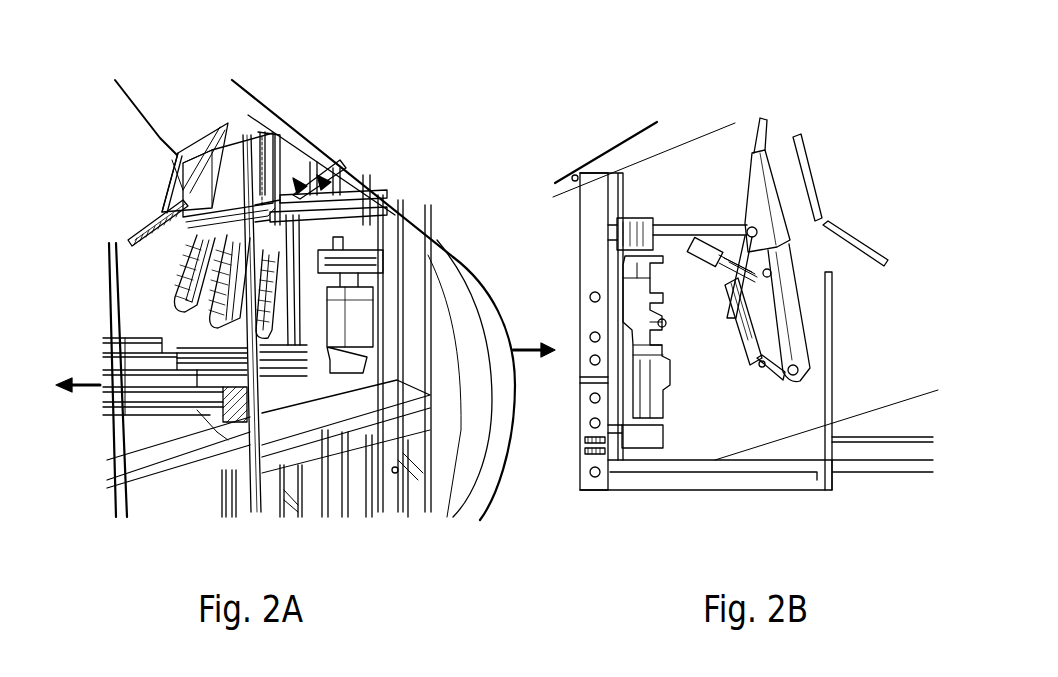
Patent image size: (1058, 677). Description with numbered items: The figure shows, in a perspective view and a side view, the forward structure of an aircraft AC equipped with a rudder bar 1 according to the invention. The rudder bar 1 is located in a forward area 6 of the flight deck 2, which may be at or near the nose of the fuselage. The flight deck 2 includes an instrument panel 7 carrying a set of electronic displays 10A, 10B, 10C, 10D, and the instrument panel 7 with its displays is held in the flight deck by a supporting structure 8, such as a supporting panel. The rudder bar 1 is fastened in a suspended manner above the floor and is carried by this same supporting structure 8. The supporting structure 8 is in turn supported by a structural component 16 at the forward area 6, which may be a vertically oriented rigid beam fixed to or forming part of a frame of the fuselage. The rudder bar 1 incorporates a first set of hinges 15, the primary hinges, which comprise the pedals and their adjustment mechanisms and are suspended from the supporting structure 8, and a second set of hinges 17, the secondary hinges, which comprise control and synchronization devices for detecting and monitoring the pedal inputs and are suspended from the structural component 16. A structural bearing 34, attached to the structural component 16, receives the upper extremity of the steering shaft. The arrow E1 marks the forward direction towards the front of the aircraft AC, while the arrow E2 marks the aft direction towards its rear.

In FIG. 2A, the rudder bar 1 is at (167, 270).
In FIG. 2B, the rudder bar 1 is at (748, 307).
In FIG. 2A, the flight deck 2 is at (130, 147).
In FIG. 2B, the flight deck 2 is at (815, 115).
In FIG. 2A, the forward area 6 is at (351, 408).
In FIG. 2B, the forward area 6 is at (677, 405).
In FIG. 2A, the instrument panel 7 is at (271, 109).
In FIG. 2B, the instrument panel 7 is at (748, 138).
In FIG. 2A, the supporting structure 8 is at (292, 138).
In FIG. 2B, the supporting structure 8 is at (759, 150).
In FIG. 2A, the electronic display 10A is at (168, 165).
In FIG. 2B, the electronic display 10A is at (815, 174).
In FIG. 2A, the electronic display 10B is at (193, 157).
In FIG. 2A, the electronic display 10C is at (232, 142).
In FIG. 2A, the electronic display 10D is at (142, 230).
In FIG. 2B, the electronic display 10D is at (856, 242).
In FIG. 2A, the first set of hinges 15 is at (308, 184).
In FIG. 2B, the first set of hinges 15 is at (818, 315).
In FIG. 2B, the structural component 16 is at (604, 214).
In FIG. 2A, the second set of hinges 17 is at (400, 195).
In FIG. 2B, the second set of hinges 17 is at (612, 264).
In FIG. 2B, the structural bearing 34 is at (641, 213).
In FIG. 2A, the aircraft AC is at (491, 504).
In FIG. 2B, the aircraft AC is at (630, 136).
In FIG. 2B, the arrow E1 is at (528, 345).
In FIG. 2A, the arrow E2 is at (85, 400).